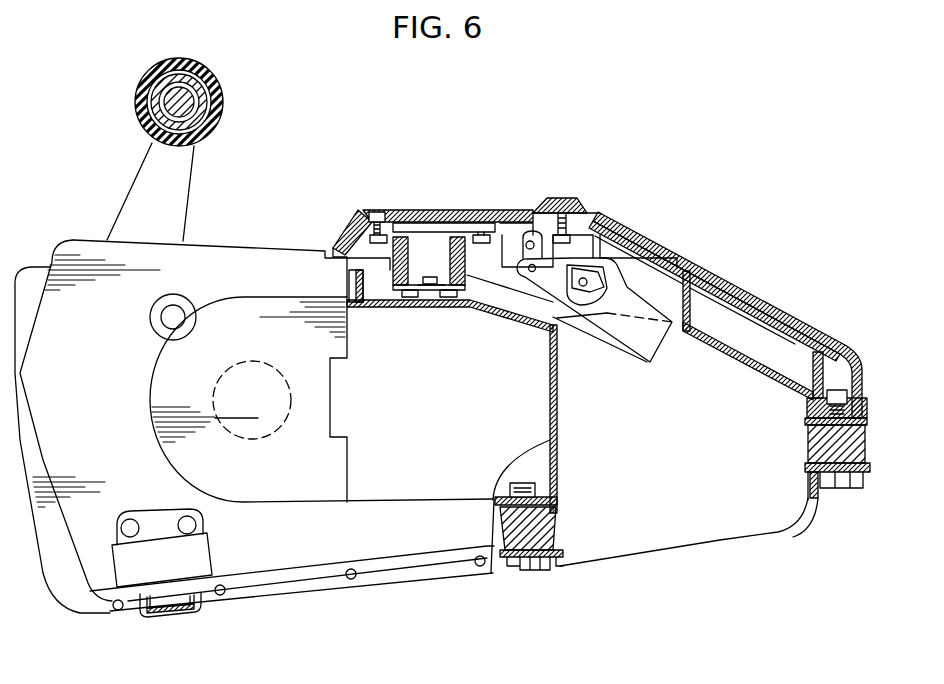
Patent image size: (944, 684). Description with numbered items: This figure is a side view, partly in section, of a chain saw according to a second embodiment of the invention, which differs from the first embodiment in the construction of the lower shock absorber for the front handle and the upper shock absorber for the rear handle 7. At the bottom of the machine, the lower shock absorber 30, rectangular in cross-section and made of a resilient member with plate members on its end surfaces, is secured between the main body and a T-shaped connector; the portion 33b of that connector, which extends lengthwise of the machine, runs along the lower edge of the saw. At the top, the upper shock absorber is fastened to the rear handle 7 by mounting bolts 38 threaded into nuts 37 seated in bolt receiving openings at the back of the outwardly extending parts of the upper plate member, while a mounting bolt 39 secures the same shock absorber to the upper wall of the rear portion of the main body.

The rear handle 7 is at (621, 224).
The lower shock absorber 30 is at (173, 600).
The portion of connector extending lengthwise of the machine 33b is at (400, 583).
The nut 37 is at (358, 236).
The mounting bolt 38 is at (378, 213).
The mounting bolt 39 is at (428, 275).